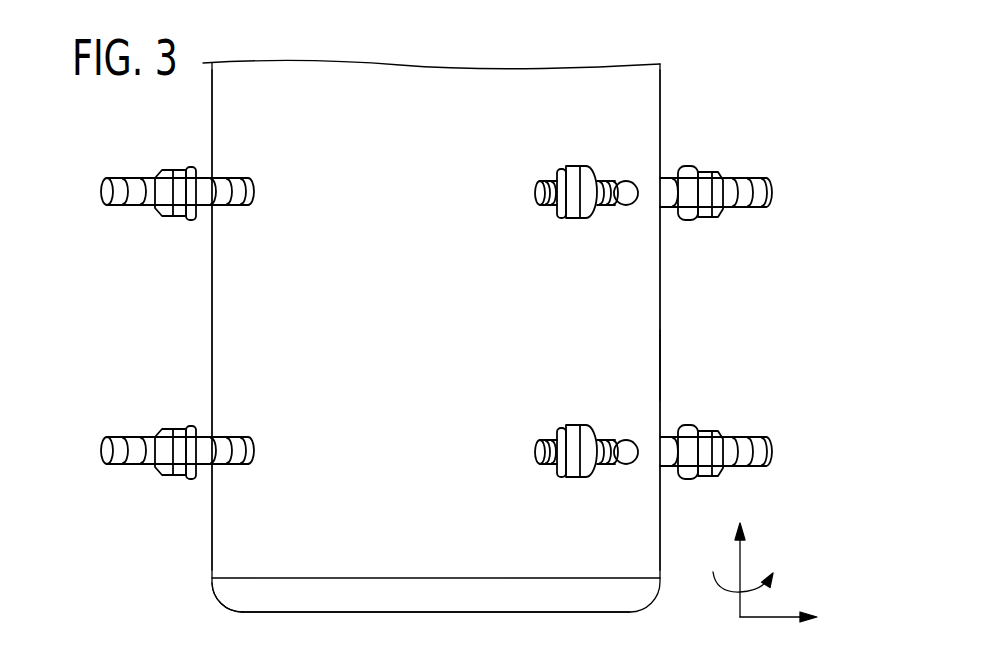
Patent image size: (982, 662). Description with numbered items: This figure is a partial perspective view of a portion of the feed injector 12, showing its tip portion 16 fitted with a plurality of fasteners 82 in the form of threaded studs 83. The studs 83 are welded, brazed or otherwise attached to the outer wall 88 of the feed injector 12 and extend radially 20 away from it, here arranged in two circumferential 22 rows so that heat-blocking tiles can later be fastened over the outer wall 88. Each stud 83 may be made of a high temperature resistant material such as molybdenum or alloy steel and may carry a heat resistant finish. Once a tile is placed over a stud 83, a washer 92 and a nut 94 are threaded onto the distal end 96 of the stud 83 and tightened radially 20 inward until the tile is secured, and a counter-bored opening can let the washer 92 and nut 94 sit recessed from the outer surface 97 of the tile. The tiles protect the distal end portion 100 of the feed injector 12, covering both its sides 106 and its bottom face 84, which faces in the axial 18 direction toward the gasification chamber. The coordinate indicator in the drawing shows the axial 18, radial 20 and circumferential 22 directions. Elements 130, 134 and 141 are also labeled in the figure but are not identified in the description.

The feed injector 12 is at (578, 78).
The tip portion 16 is at (625, 72).
The axial direction 18 is at (742, 557).
The radial direction 20 is at (780, 620).
The circumferential direction 22 is at (725, 592).
The fasteners 82 is at (141, 206).
The studs 83 is at (119, 206).
The bottom face 84 is at (287, 612).
The outer wall 88 is at (632, 369).
The washer 92 is at (192, 221).
The nut 94 is at (173, 171).
The distal end 96 is at (125, 178).
The outer surface 97 is at (300, 658).
The distal end portion 100 is at (238, 594).
The sides 106 is at (230, 313).
The mount 130 is at (500, 650).
The bracket 134 is at (458, 649).
The fastener 141 is at (375, 649).